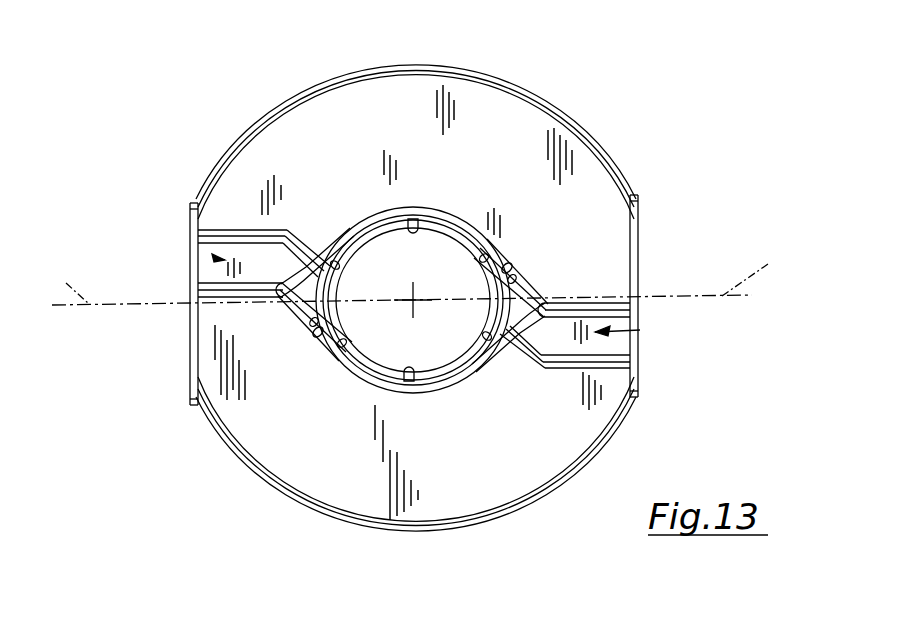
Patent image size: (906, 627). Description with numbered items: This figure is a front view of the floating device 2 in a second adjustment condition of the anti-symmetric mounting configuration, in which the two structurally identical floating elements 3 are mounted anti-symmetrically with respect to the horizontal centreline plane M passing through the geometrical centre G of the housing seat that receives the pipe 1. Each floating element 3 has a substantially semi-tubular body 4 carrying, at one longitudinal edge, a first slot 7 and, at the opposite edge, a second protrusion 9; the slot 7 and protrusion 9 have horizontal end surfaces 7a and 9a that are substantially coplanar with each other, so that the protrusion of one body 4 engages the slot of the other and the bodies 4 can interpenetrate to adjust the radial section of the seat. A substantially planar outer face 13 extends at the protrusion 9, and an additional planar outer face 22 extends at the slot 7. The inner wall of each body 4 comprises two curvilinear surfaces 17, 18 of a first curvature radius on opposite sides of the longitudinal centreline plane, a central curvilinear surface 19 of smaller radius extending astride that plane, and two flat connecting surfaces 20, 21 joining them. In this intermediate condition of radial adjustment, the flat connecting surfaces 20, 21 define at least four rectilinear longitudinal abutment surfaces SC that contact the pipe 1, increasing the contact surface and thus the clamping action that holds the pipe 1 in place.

The pipe 1 is at (427, 287).
The floating device 2 is at (606, 108).
The floating element 3 is at (292, 152).
The semi-tubular body 4 is at (536, 74).
The first slot 7 is at (228, 257).
The horizontal end surface of the first slot 7a is at (204, 236).
The second protrusion 9 is at (409, 299).
The horizontal end surface of the second protrusion 9a is at (202, 280).
The planar outer face 13 is at (646, 212).
The curvilinear surface 17 is at (312, 326).
The curvilinear surface 18 is at (512, 270).
The curvilinear surface 19 is at (428, 218).
The flat connecting surface 20 is at (334, 258).
The flat connecting surface 21 is at (490, 252).
The additional planar outer face 22 is at (194, 203).
The rectilinear longitudinal abutment surface SC is at (484, 430).
The geometrical centre G is at (413, 300).
The horizontal centreline plane M is at (414, 270).